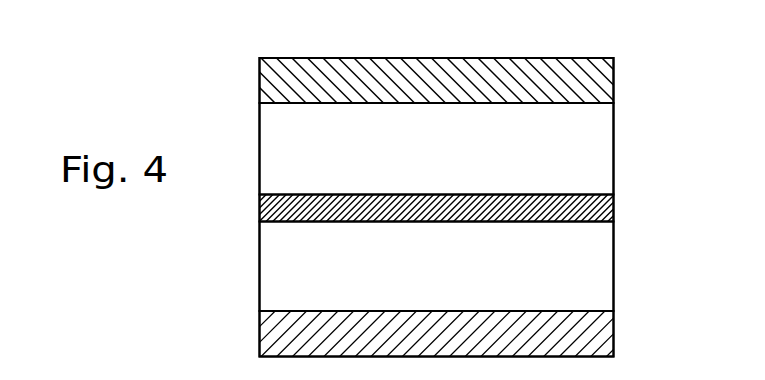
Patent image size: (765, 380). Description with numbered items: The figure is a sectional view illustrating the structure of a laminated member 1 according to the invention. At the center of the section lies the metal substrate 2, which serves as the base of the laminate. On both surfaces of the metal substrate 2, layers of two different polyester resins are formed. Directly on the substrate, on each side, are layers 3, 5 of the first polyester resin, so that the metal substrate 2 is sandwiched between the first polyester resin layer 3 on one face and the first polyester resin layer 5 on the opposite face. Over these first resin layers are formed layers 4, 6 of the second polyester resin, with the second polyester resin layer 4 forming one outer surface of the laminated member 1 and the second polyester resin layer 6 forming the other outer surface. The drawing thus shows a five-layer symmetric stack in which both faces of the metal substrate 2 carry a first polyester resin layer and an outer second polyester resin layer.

The laminated member 1 is at (628, 43).
The metal substrate 2 is at (607, 207).
The layer of the first polyester resin 3 is at (607, 141).
The layer of the second polyester resin 4 is at (605, 78).
The layer of the first polyester resin 5 is at (607, 275).
The layer of the second polyester resin 6 is at (607, 337).